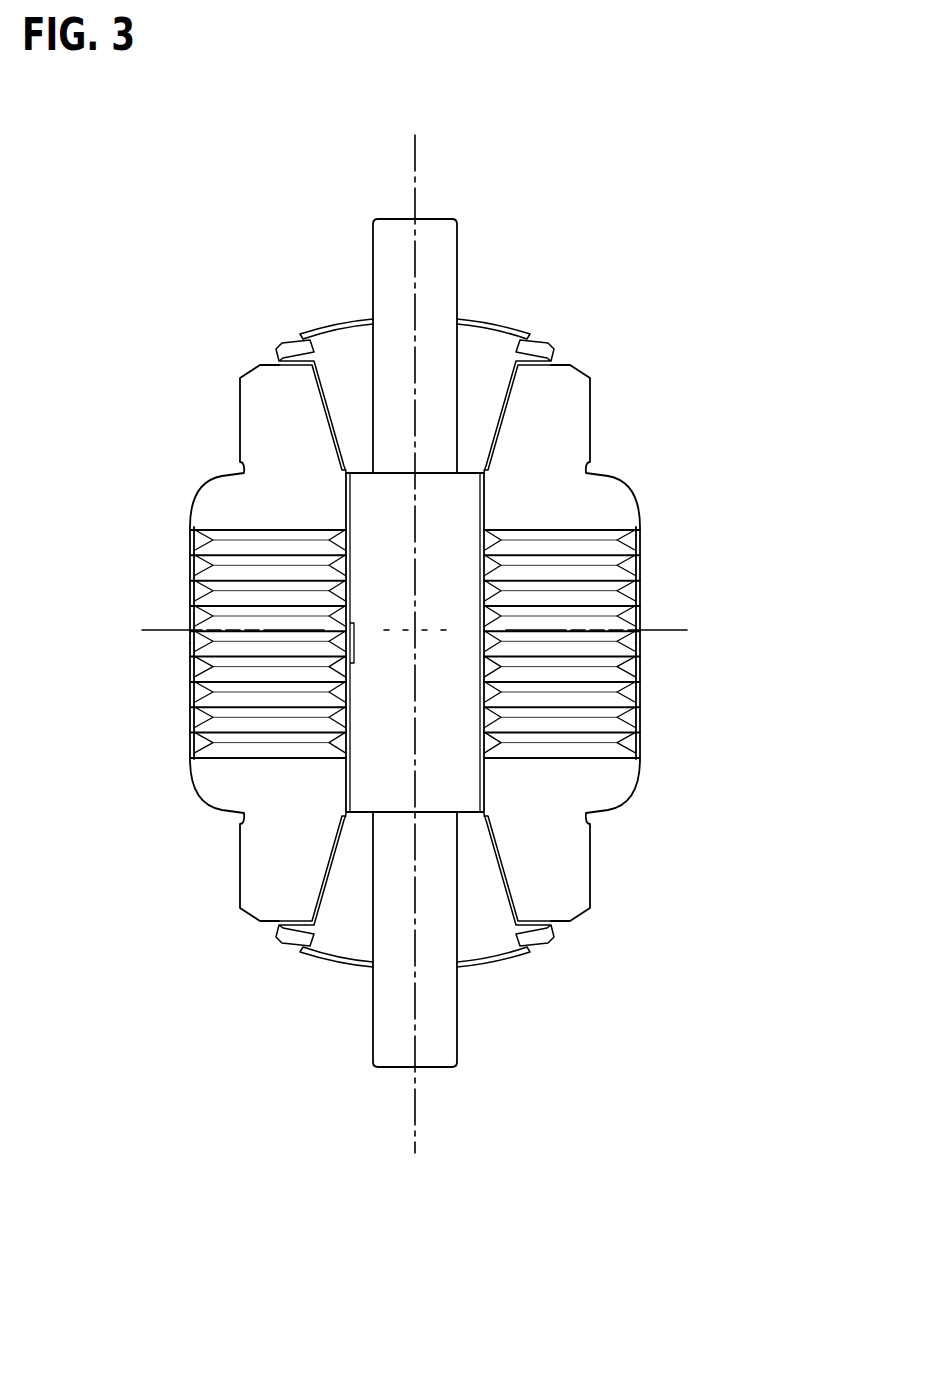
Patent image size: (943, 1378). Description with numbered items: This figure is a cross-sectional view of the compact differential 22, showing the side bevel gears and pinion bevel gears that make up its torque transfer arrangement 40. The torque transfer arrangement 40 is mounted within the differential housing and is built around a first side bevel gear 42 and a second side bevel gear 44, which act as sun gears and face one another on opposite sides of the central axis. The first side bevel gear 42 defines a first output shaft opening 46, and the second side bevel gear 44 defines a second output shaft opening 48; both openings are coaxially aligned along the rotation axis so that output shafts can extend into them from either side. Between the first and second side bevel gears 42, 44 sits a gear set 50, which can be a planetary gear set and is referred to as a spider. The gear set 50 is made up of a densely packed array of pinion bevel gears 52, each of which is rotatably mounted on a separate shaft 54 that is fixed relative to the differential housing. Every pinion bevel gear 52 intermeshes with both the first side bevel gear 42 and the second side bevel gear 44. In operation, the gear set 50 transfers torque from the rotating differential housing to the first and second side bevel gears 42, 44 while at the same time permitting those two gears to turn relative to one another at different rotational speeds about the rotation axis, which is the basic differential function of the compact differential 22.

The compact differential 22 is at (436, 675).
The torque transfer arrangement 40 is at (493, 1003).
The first side bevel gear 42 is at (218, 478).
The second side bevel gear 44 is at (625, 483).
The first output shaft opening 46 is at (256, 758).
The second output shaft opening 48 is at (590, 752).
The gear set 50 is at (311, 298).
The pinion bevel gears 52 is at (500, 320).
The shaft 54 is at (404, 219).